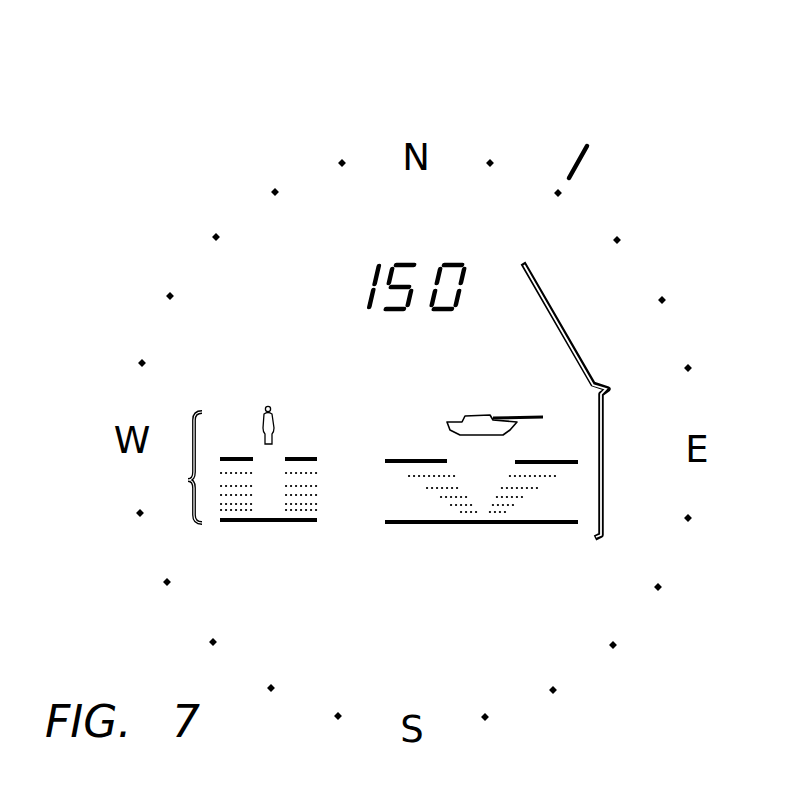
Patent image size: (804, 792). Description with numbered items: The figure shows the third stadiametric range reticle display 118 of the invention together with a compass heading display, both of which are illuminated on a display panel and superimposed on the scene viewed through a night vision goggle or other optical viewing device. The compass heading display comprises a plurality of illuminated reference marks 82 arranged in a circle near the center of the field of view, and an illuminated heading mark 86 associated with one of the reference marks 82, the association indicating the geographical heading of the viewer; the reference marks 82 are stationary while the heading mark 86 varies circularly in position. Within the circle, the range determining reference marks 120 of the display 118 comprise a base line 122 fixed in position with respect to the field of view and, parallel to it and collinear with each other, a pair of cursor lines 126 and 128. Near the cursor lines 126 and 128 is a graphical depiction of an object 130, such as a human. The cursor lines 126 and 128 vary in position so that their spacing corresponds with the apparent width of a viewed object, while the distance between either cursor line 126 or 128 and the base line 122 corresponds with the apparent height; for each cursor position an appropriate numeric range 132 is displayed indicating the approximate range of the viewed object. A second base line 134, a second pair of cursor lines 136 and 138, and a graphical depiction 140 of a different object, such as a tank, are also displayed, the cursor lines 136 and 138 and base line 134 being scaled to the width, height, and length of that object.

The reference marks 82 is at (345, 165).
The heading mark 86 is at (583, 162).
The third stadiametric range reticle display 118 is at (589, 400).
The range determining reference marks 120 is at (173, 467).
The base line 122 is at (247, 524).
The cursor line 126 is at (237, 458).
The cursor line 128 is at (307, 458).
The graphical depiction of an object 130 is at (266, 406).
The numeric range figure 132 is at (362, 297).
The second base line 134 is at (517, 524).
The cursor line 136 is at (407, 460).
The cursor line 138 is at (550, 460).
The graphical depiction of a different object 140 is at (467, 414).